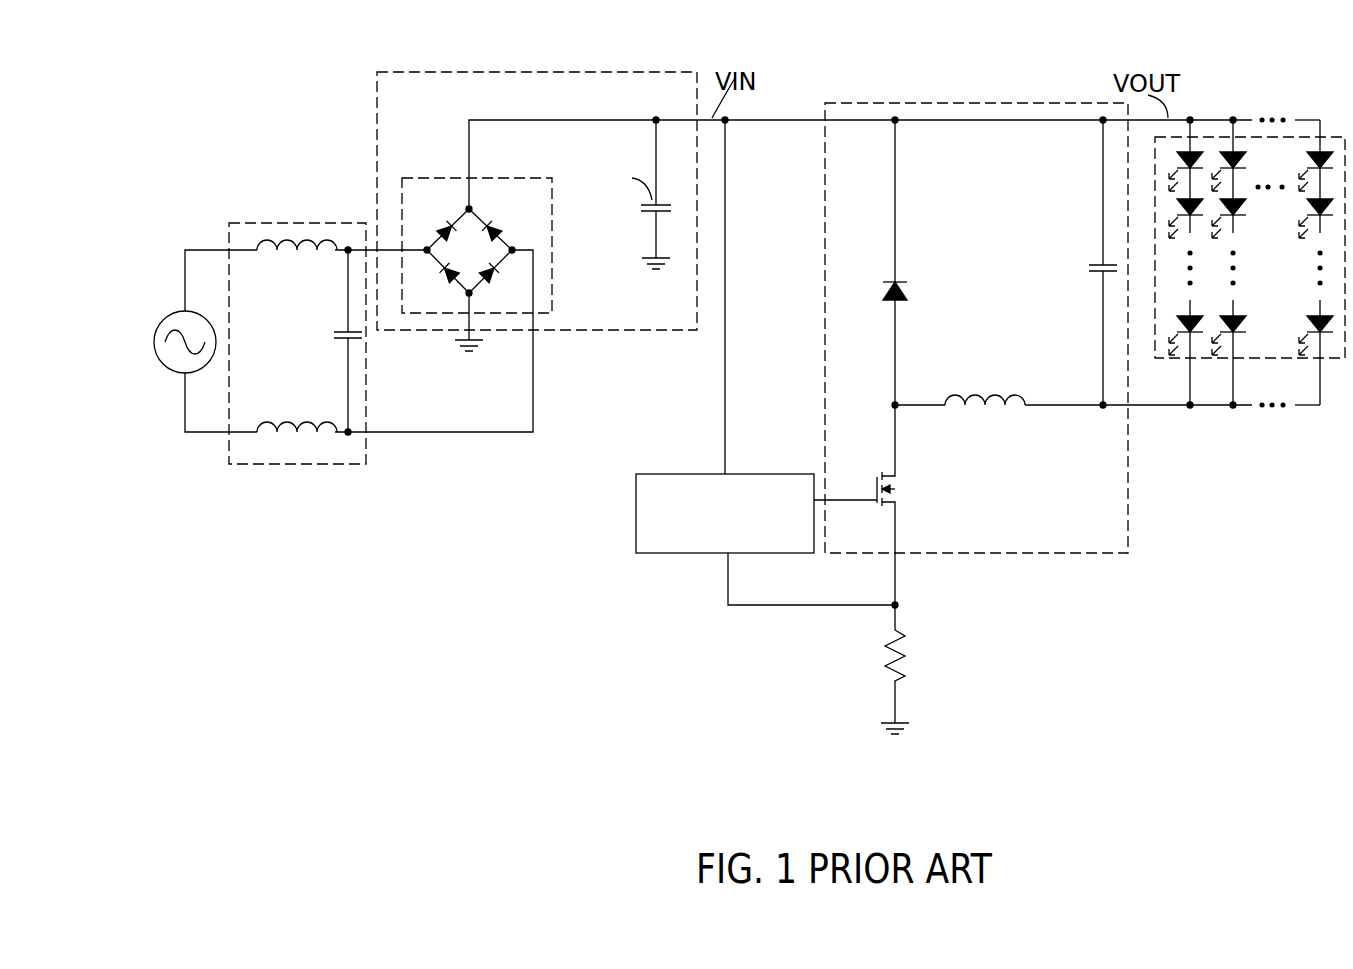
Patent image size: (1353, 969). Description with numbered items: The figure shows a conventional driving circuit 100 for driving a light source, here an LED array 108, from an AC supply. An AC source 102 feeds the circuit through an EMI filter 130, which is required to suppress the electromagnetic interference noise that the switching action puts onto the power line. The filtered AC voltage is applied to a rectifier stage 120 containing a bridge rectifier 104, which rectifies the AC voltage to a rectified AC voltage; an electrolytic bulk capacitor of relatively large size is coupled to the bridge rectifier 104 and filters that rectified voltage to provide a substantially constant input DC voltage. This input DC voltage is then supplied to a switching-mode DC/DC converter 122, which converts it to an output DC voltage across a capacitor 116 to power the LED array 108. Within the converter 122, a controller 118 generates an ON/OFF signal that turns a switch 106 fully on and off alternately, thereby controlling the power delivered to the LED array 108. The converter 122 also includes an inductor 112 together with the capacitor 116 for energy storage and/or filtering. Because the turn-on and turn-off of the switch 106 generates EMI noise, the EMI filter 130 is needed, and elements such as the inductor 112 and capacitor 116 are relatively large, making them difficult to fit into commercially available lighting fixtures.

The driving circuit 100 is at (238, 133).
The AC power source 102 is at (167, 318).
The bridge rectifier 104 is at (487, 178).
The switch 106 is at (875, 485).
The LED array 108 is at (1178, 360).
The inductor 112 is at (973, 393).
The capacitor 116 is at (1100, 262).
The controller 118 is at (745, 474).
The rectifier stage 120 is at (515, 72).
The switching-mode DC/DC converter 122 is at (873, 103).
The EMI filter 130 is at (263, 222).